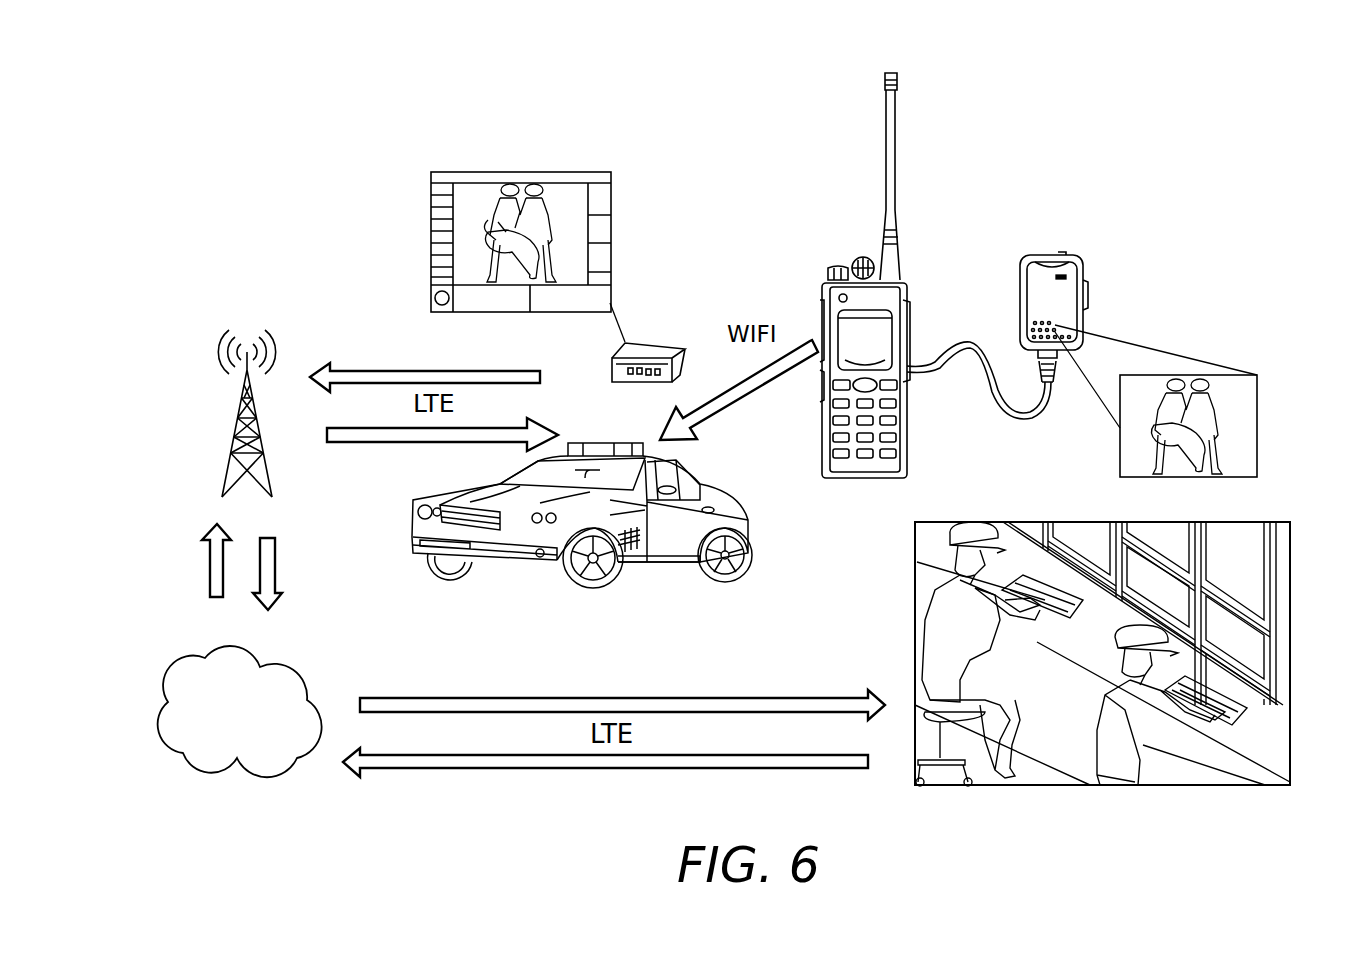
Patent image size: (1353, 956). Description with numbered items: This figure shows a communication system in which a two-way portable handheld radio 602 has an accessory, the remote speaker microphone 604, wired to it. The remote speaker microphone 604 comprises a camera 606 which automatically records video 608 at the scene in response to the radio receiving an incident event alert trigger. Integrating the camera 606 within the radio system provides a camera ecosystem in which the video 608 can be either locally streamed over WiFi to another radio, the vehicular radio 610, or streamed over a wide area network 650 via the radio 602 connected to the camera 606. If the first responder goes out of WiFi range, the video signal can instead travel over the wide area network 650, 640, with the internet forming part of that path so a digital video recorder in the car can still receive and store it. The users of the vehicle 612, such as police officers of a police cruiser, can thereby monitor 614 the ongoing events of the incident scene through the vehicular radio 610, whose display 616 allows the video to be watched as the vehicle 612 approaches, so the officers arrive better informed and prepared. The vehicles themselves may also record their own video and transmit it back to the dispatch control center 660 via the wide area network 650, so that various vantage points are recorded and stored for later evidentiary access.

The two-way portable handheld radio 602 is at (900, 440).
The remote speaker microphone 604 is at (1022, 326).
The camera 606 is at (1066, 277).
The video 608 is at (1257, 425).
The vehicular radio 610 is at (656, 342).
The vehicle 612 is at (705, 472).
The monitor 614 is at (554, 217).
The display 616 is at (578, 226).
The wide area network 640 is at (283, 658).
The wide area network 650 is at (233, 435).
The dispatch control center 660 is at (1290, 652).